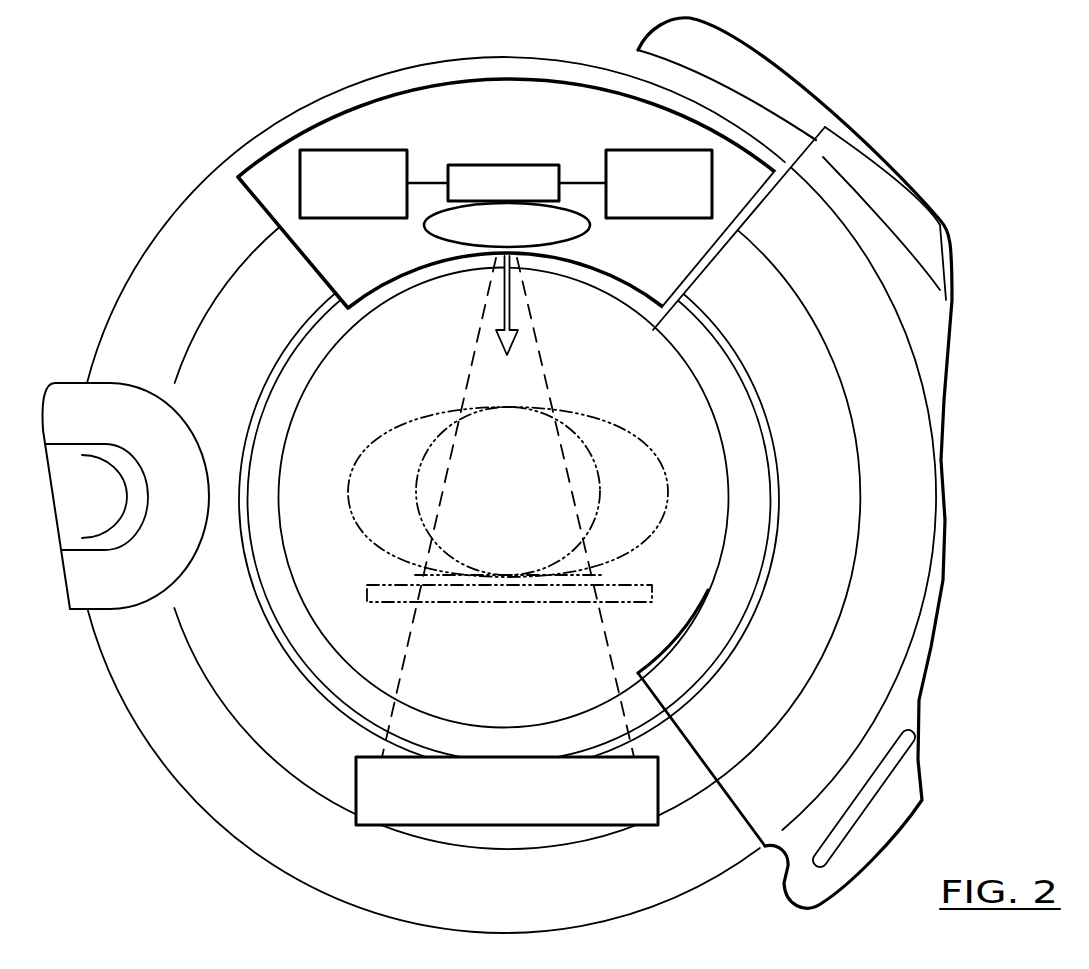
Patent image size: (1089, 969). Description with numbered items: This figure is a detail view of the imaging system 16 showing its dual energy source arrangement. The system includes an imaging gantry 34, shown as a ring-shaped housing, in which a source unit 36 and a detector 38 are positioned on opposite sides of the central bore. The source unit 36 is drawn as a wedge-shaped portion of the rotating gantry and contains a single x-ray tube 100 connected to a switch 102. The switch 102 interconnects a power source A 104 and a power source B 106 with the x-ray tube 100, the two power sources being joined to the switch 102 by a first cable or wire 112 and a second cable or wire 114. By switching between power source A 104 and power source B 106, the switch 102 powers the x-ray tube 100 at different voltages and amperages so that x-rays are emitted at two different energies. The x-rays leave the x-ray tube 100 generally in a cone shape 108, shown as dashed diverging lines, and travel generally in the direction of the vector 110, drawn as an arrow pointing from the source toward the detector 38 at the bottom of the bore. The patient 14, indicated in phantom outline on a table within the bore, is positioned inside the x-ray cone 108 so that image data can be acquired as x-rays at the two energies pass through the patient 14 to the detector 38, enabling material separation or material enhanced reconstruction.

The patient 14 is at (608, 424).
The imaging system 16 is at (264, 101).
The imaging gantry 34 is at (232, 163).
The source unit 36 is at (262, 205).
The detector 38 is at (356, 792).
The x-ray tube 100 is at (440, 238).
The switch 102 is at (508, 165).
The power source A 104 is at (317, 150).
The power source B 106 is at (690, 150).
The cone shape 108 is at (548, 392).
The vector 110 is at (502, 344).
The first cable or wire 112 is at (420, 182).
The second cable or wire 114 is at (588, 182).